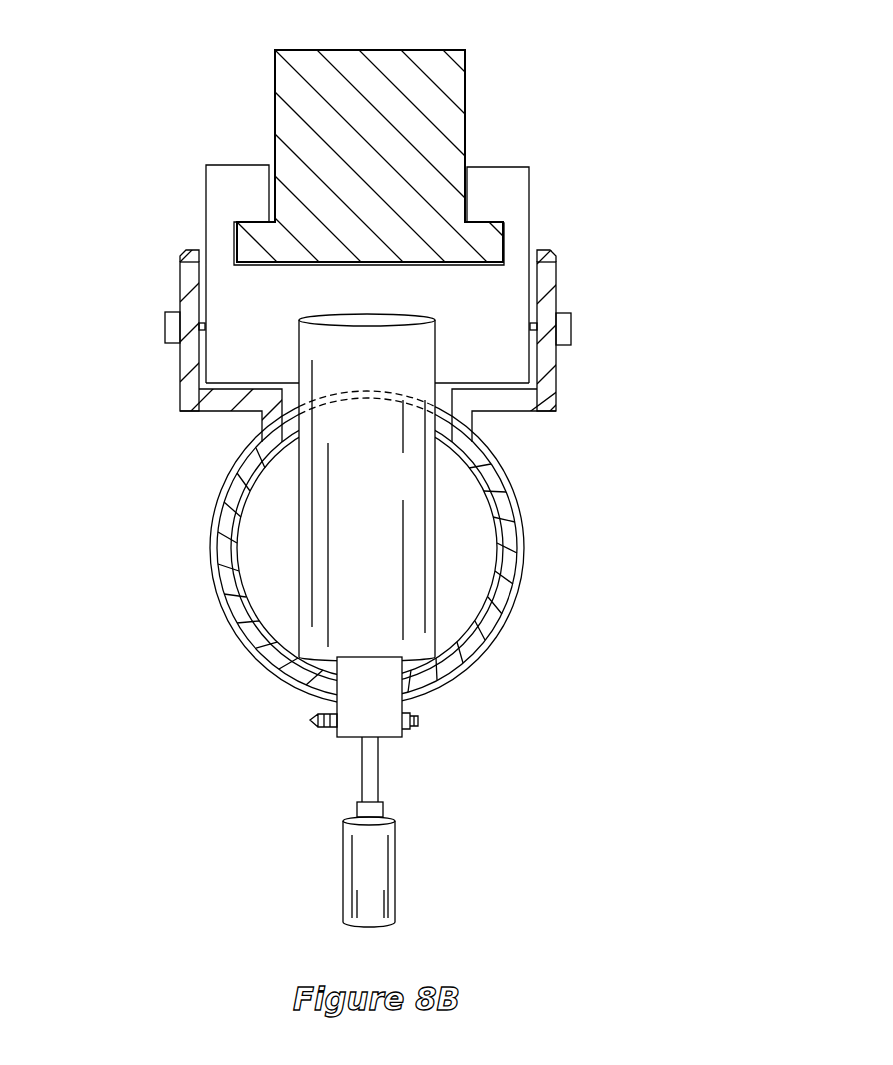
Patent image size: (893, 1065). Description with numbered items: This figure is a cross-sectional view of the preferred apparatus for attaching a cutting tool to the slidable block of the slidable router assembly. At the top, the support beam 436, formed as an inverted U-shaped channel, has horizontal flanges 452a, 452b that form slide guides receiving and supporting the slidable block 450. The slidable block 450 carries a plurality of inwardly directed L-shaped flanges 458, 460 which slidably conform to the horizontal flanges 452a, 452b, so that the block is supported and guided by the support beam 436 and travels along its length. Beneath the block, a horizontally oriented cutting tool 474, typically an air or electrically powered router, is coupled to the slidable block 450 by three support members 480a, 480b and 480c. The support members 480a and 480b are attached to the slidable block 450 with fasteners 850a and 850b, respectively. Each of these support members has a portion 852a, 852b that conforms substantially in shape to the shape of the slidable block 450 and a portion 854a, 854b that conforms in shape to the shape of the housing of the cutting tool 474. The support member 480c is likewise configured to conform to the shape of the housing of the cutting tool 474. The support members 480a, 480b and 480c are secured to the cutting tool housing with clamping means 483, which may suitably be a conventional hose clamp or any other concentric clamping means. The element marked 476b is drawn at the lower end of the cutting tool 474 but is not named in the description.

The support beam 436 is at (478, 77).
The inwardly directed L-shaped flange 458 is at (260, 173).
The slidable block 450 is at (207, 155).
The inwardly directed L-shaped flange 460 is at (507, 178).
The support member 480b is at (180, 257).
The support member 480a is at (548, 258).
The support member 480c is at (475, 650).
The horizontal flange 452b is at (253, 251).
The horizontal flange 452a is at (488, 247).
The fastener 850b is at (172, 325).
The fastener 850a is at (562, 330).
The block-conforming portion of support member 852b is at (140, 362).
The block-conforming portion of support member 852a is at (595, 370).
The housing-conforming portion of support member 854b is at (247, 455).
The housing-conforming portion of support member 854a is at (497, 470).
The clamping means 483 is at (505, 552).
The cutting tool 474 is at (475, 550).
The lower cylinder stem 476b is at (380, 882).